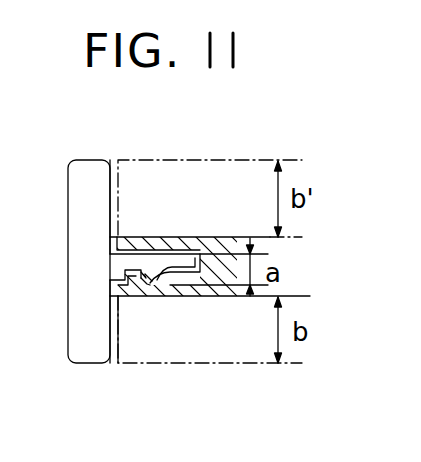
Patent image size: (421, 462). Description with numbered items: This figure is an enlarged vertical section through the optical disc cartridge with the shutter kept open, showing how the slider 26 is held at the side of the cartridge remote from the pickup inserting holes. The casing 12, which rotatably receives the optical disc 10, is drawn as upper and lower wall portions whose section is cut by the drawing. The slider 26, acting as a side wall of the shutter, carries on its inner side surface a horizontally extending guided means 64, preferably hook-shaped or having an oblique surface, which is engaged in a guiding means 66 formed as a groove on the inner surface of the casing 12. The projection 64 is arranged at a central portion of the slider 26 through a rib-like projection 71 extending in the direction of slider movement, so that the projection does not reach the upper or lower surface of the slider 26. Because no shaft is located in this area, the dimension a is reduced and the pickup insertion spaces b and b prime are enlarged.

The optical disc 10 is at (163, 158).
The casing 12 is at (167, 368).
The slider 26 is at (80, 228).
The guided means 64 is at (149, 285).
The guiding means 66 is at (180, 290).
The rib-like projection 71 is at (149, 278).